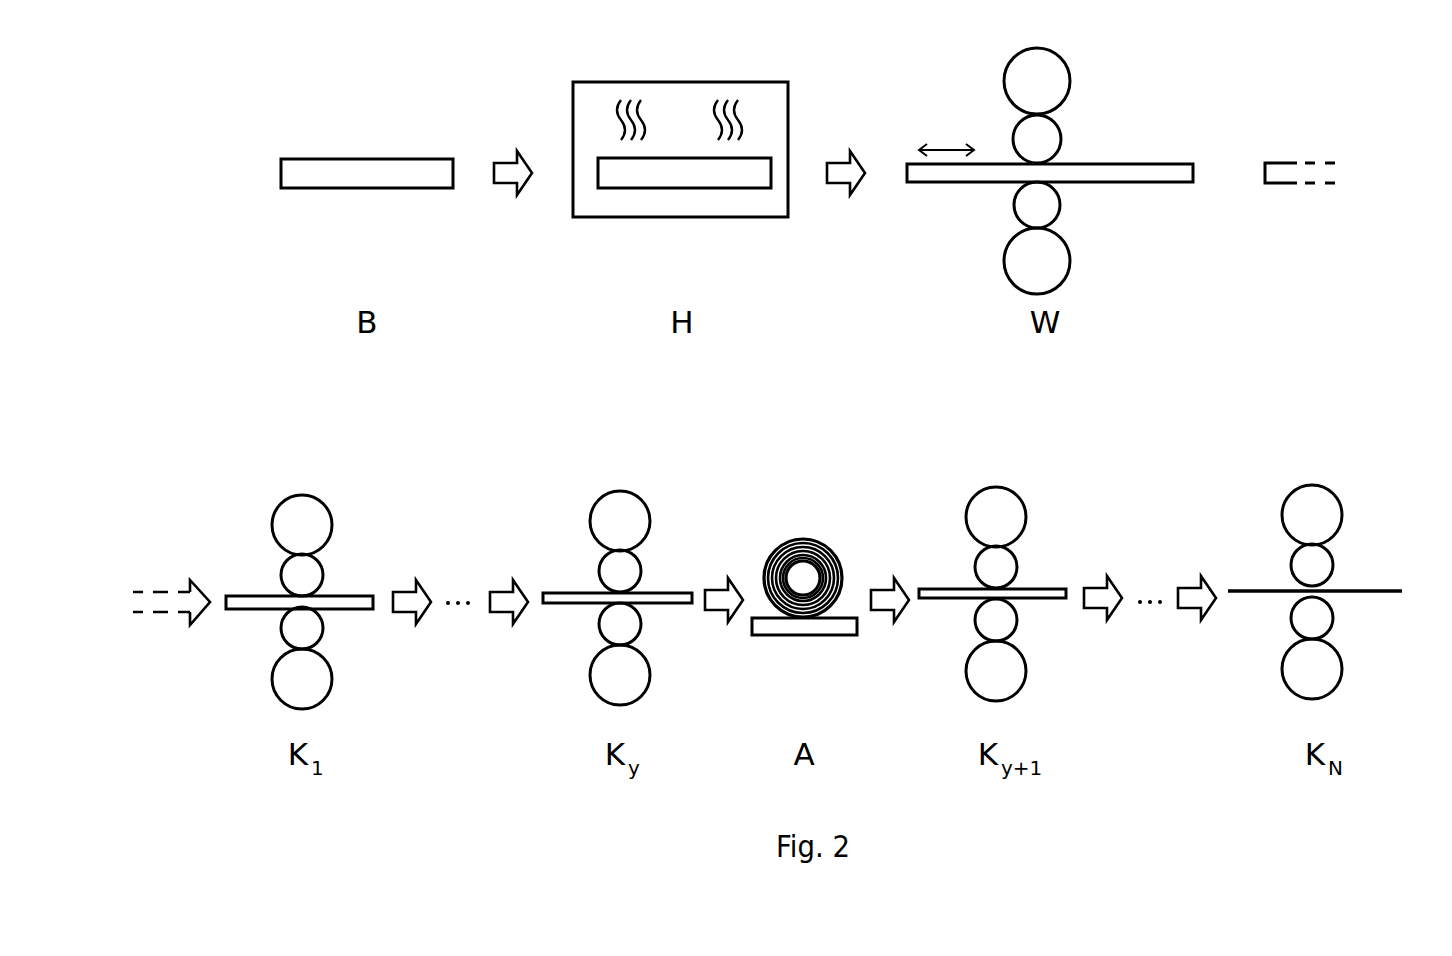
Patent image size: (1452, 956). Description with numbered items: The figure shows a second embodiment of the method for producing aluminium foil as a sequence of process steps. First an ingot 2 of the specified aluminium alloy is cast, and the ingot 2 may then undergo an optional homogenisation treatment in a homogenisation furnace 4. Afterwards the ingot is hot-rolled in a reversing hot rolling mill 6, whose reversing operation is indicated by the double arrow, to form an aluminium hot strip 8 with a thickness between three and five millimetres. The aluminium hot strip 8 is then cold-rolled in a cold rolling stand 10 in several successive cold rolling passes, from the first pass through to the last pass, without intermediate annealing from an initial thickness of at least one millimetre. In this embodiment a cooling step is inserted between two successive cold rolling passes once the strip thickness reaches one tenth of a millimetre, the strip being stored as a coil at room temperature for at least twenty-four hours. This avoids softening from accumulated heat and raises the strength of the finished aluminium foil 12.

The ingot 2 is at (362, 189).
The homogenisation furnace 4 is at (688, 217).
The reversing hot rolling mill 6 is at (1060, 58).
The aluminium hot strip 8 is at (1160, 173).
The cold rolling stand 10 is at (322, 503).
The aluminium foil 12 is at (1372, 590).